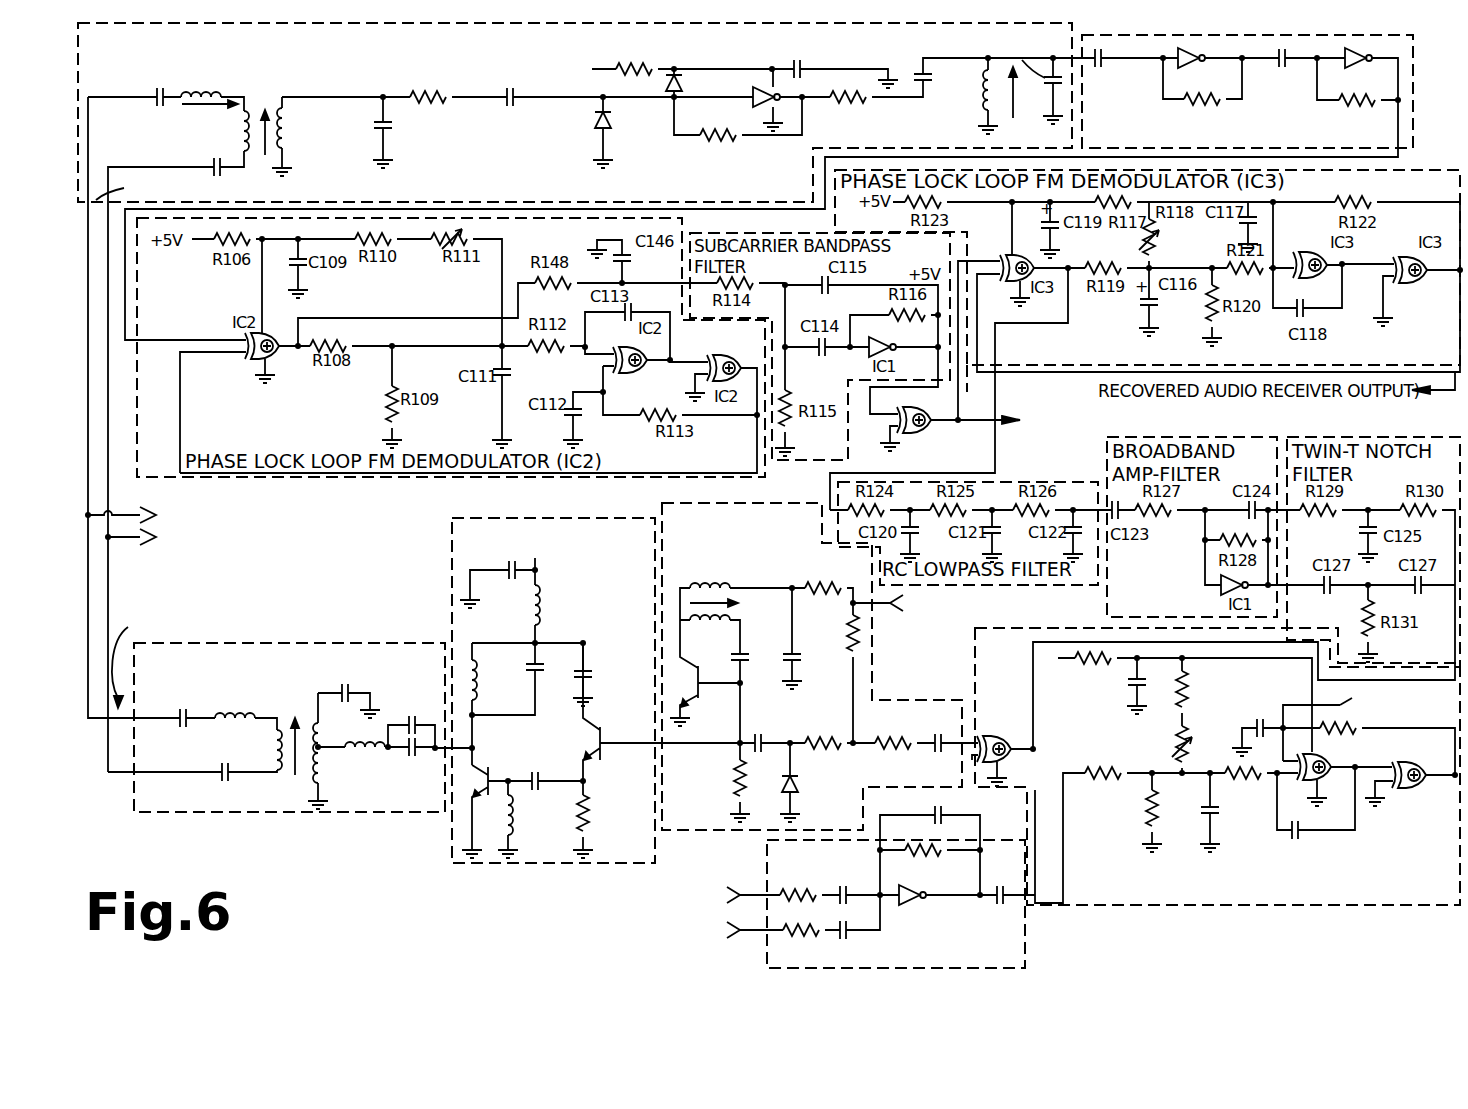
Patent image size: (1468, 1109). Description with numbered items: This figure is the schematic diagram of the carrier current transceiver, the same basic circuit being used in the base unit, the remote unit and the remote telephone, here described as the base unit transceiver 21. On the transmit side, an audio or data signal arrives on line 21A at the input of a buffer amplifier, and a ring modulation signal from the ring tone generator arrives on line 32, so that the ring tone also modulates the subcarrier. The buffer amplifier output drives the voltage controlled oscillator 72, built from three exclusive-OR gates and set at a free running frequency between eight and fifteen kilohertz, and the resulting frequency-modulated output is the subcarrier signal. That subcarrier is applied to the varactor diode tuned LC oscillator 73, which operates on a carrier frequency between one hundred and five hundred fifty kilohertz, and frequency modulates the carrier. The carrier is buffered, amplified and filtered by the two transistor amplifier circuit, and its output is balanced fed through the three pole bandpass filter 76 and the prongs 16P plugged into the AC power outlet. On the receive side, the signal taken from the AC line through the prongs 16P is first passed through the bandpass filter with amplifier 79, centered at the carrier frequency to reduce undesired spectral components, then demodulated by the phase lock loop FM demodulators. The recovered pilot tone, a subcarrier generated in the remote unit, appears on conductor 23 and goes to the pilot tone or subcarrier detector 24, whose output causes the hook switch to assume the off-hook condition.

The bandpass filter with amplifier 79 is at (78, 196).
The prongs 16P is at (169, 514).
The pilot tone or subcarrier detector 24 is at (452, 605).
The three pole bandpass filter 76 is at (405, 643).
The varactor diode tuned LC oscillator 73 is at (658, 512).
The conductor 23 is at (1000, 429).
The line 21A is at (757, 884).
The line 32 is at (763, 935).
The base unit transceiver 21 is at (1025, 929).
The voltage controlled oscillator 72 is at (1238, 905).